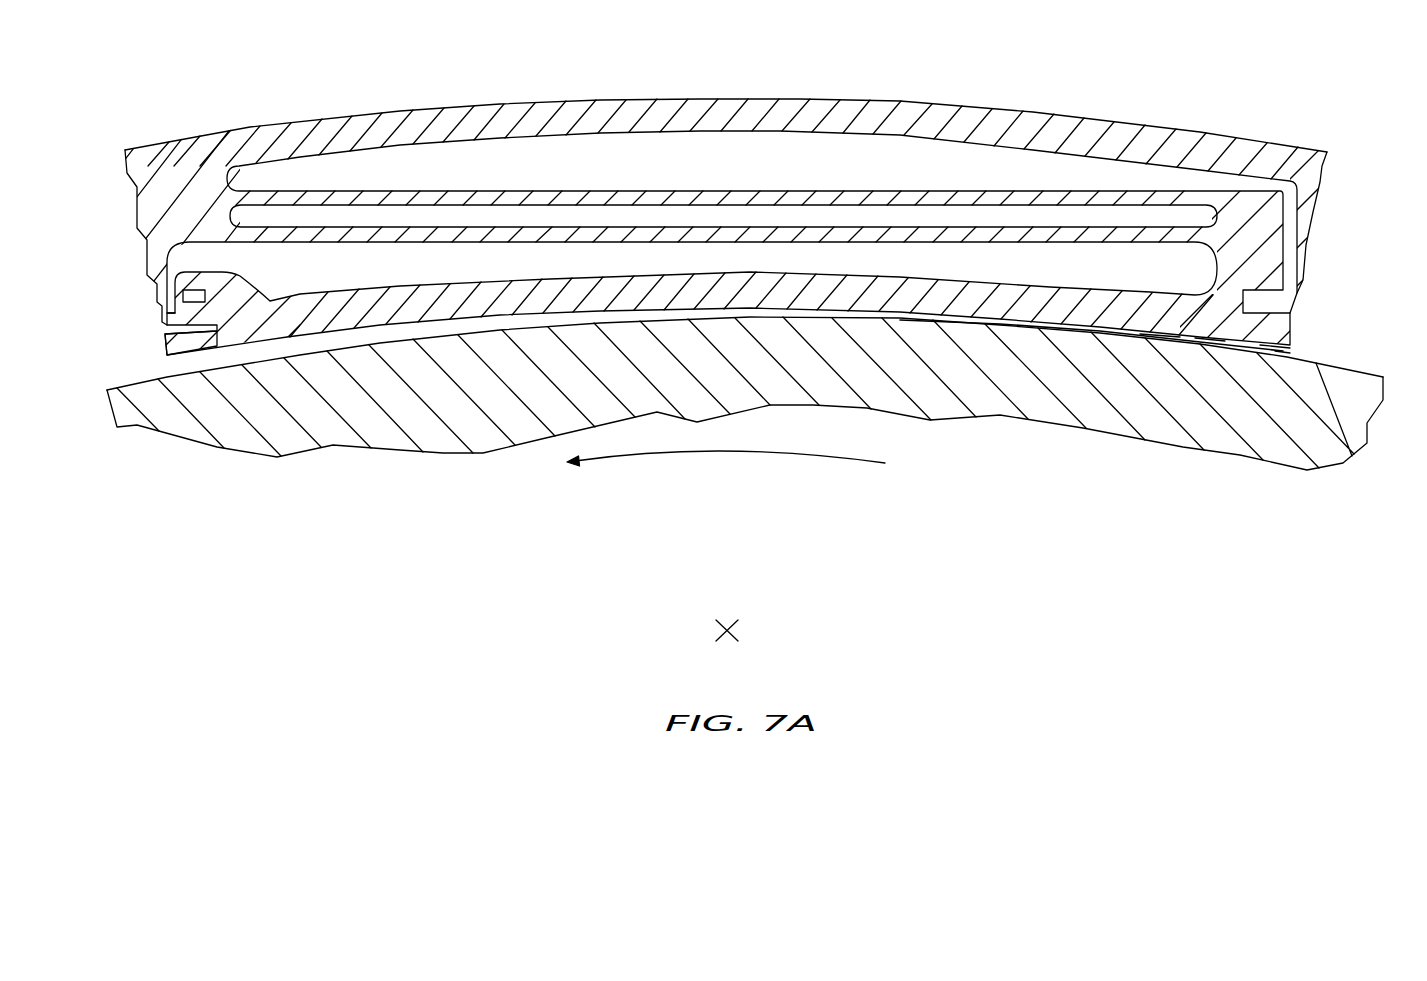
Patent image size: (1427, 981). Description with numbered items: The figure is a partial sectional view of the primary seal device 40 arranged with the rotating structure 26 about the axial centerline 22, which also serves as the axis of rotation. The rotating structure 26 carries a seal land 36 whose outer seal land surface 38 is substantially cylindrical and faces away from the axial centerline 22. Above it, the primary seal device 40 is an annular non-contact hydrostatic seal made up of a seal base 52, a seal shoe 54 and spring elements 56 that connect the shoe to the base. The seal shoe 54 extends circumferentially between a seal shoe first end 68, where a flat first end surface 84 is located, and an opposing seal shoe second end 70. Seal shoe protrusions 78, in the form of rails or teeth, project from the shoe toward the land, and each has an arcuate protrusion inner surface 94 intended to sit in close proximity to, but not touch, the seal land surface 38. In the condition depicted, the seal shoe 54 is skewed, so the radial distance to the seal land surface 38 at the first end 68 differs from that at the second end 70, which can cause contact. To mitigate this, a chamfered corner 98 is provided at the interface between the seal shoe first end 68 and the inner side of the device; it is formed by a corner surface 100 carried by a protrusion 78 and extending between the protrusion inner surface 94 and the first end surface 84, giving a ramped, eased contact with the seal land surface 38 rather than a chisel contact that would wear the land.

The axial centerline 22 is at (735, 632).
The rotating structure 26 is at (716, 434).
The seal land 36 is at (716, 434).
The seal land surface 38 is at (140, 382).
The primary seal device 40 is at (1222, 98).
The seal base 52 is at (910, 97).
The seal shoe 54 is at (458, 282).
The spring element 56 is at (758, 188).
The seal shoe first end 68 is at (1156, 324).
The first end surface 84 is at (1270, 343).
The seal shoe second end 70 is at (163, 343).
The seal shoe protrusion 78 is at (1213, 347).
The protrusion inner surface 94 is at (1177, 347).
The chamfered corner 98 is at (1291, 356).
The corner surface 100 is at (1278, 350).